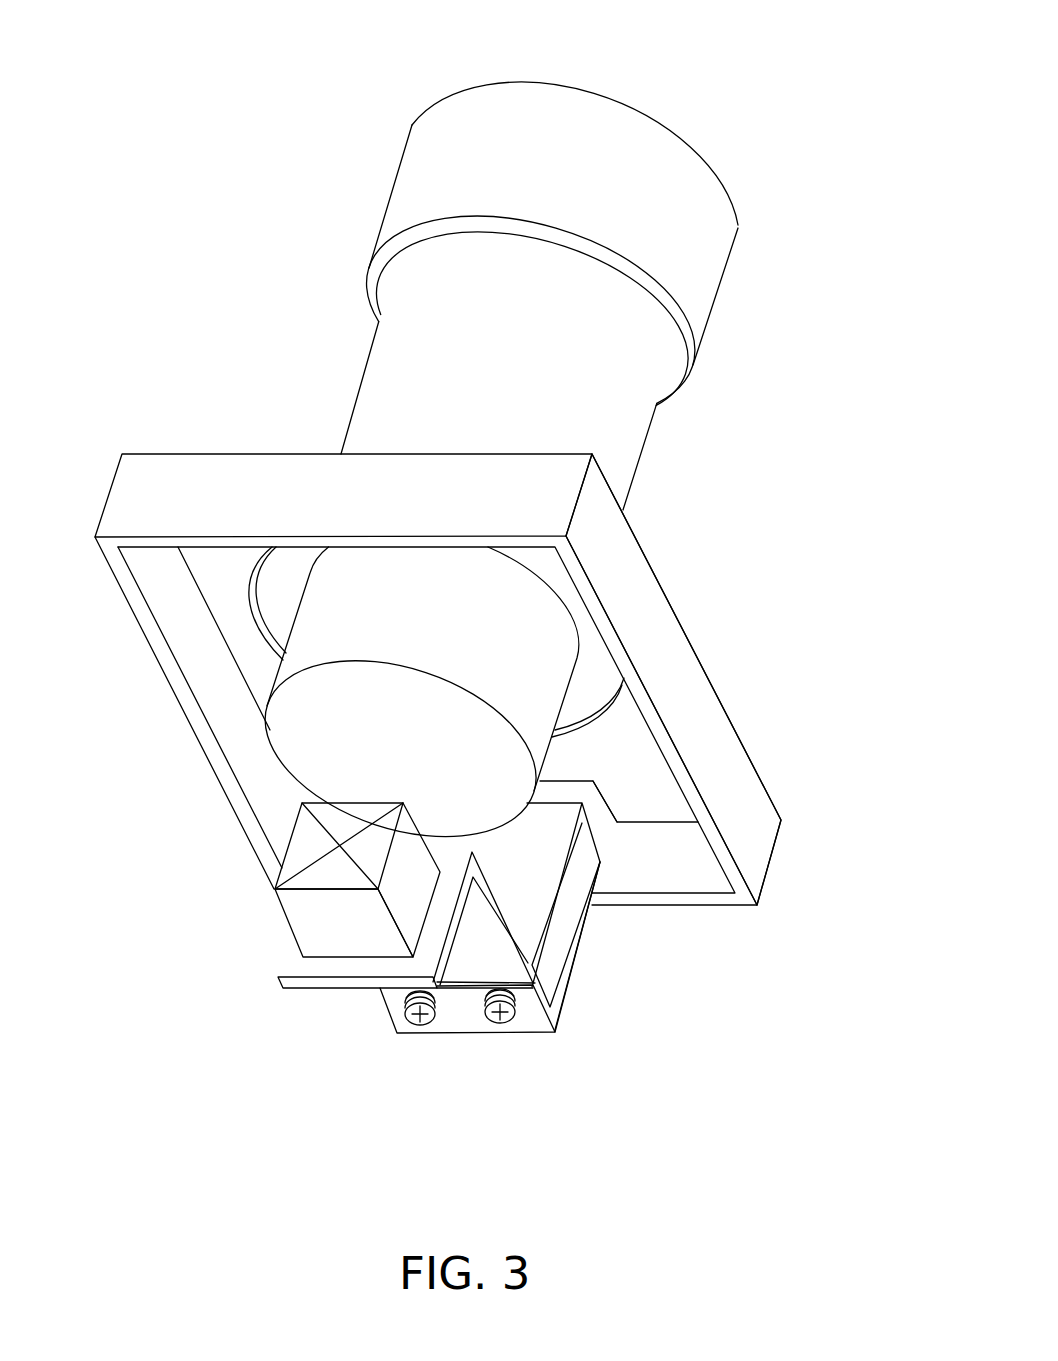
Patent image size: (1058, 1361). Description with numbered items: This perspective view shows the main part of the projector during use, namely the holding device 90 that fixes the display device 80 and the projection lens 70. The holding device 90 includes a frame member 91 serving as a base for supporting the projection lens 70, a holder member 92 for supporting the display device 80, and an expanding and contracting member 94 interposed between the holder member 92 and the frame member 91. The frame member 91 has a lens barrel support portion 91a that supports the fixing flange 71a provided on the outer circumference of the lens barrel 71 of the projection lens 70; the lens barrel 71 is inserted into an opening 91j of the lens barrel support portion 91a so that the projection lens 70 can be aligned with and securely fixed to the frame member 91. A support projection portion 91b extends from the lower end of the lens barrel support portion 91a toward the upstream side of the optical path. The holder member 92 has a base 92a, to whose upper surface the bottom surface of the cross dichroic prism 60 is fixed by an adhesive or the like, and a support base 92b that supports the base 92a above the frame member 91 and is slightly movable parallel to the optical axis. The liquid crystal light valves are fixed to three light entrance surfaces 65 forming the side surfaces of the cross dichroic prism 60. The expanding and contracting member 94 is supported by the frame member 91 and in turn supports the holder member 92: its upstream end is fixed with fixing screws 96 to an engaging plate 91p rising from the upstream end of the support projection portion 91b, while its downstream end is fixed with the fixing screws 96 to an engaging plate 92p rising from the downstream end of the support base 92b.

The projection lens 70 is at (752, 101).
The lens barrel 71 is at (640, 433).
The fixing flange 71a is at (598, 668).
The holding device 90 is at (492, 756).
The frame member 91 is at (768, 748).
The lens barrel support portion 91a is at (682, 676).
The support projection portion 91b is at (570, 975).
The opening 91j is at (255, 586).
The engaging plate 91p is at (520, 1025).
The holder member 92 is at (350, 979).
The base 92a is at (292, 963).
The support base 92b is at (495, 903).
The engaging plate 92p is at (600, 843).
The expanding and contracting member 94 is at (563, 933).
The fixing screws 96 is at (497, 1030).
The cross dichroic prism 60 is at (290, 913).
The light entrance surfaces 65 is at (248, 881).
The display device 80 is at (261, 940).